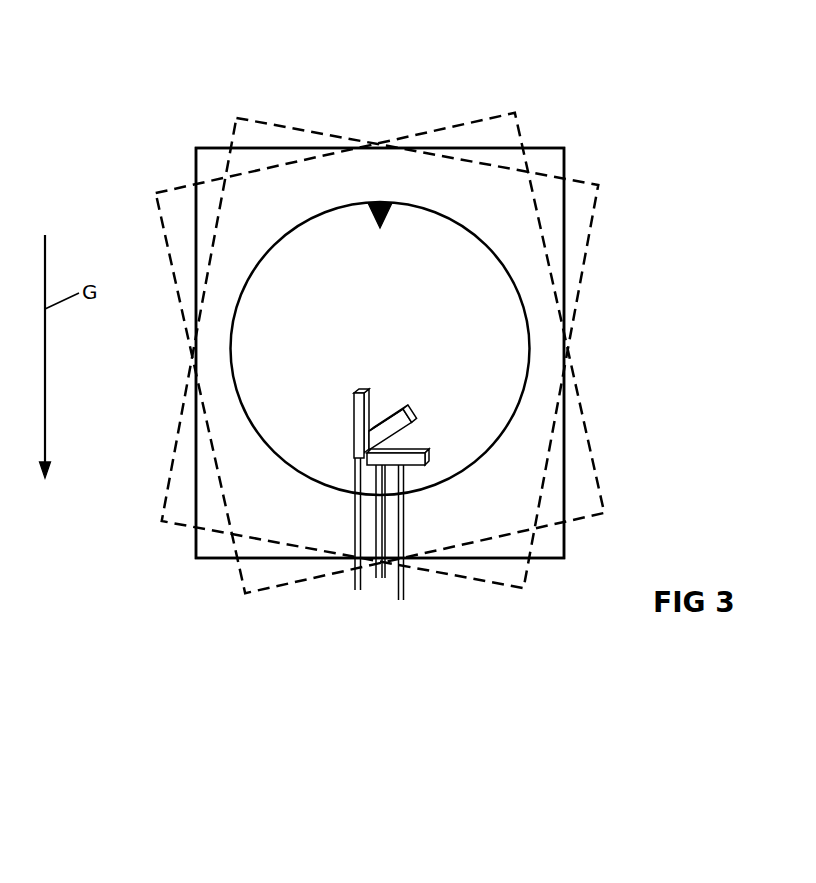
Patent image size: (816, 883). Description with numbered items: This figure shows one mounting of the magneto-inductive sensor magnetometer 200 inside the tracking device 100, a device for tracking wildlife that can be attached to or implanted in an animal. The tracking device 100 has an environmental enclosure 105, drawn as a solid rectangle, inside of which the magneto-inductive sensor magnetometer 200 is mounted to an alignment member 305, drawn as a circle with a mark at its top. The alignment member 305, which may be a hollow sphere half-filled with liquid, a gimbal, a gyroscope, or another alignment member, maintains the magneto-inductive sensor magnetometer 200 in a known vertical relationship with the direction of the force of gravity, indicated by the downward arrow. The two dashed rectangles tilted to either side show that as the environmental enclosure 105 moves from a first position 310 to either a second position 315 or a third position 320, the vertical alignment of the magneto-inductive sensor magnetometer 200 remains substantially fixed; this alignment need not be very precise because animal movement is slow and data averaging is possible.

The tracking device 100 is at (668, 62).
The environmental enclosure 105 is at (533, 148).
The magneto-inductive sensor magnetometer 200 is at (424, 382).
The alignment member 305 is at (428, 207).
The first position 310 is at (565, 168).
The second position 315 is at (487, 120).
The third position 320 is at (594, 218).